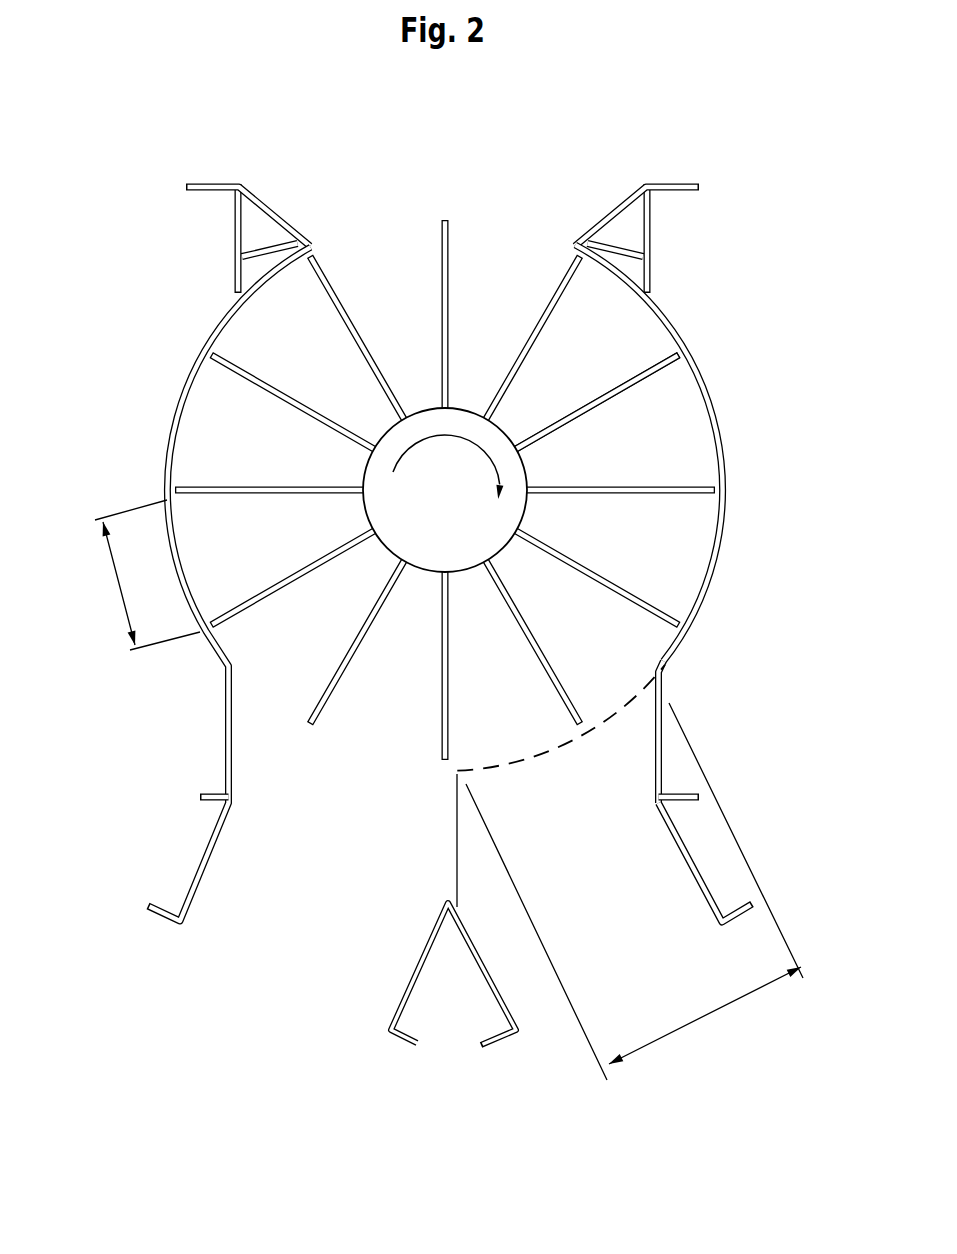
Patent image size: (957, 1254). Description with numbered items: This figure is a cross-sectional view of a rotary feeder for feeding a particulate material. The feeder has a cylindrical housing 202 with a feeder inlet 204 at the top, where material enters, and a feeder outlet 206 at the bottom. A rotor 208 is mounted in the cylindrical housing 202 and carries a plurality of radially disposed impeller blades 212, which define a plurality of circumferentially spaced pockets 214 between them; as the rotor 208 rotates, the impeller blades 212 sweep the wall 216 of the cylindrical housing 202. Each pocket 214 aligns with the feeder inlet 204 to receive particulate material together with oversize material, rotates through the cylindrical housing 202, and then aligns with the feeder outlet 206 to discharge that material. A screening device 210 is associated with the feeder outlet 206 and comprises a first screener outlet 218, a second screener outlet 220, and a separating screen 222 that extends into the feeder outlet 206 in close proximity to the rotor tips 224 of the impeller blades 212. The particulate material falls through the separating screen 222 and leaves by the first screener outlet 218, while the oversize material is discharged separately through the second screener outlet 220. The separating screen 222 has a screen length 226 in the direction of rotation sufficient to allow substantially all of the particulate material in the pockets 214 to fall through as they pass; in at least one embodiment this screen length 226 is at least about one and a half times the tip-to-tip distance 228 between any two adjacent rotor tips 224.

The cylindrical housing 202 is at (185, 386).
The feeder inlet 204 is at (457, 135).
The feeder outlet 206 is at (670, 742).
The rotor 208 is at (524, 513).
The screening device 210 is at (697, 850).
The impeller blades 212 is at (350, 680).
The circumferentially spaced pockets 214 is at (680, 408).
The wall of the cylindrical housing 216 is at (718, 525).
The first screener outlet 218 is at (620, 935).
The second screener outlet 220 is at (298, 973).
The separating screen 222 is at (535, 762).
The rotor tips 224 is at (665, 355).
The screen length 226 is at (705, 1025).
The tip-to-tip distance 228 is at (118, 585).